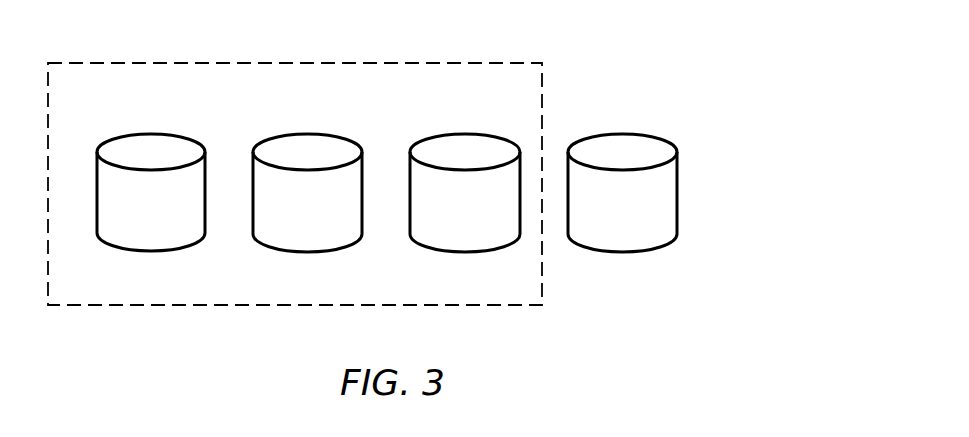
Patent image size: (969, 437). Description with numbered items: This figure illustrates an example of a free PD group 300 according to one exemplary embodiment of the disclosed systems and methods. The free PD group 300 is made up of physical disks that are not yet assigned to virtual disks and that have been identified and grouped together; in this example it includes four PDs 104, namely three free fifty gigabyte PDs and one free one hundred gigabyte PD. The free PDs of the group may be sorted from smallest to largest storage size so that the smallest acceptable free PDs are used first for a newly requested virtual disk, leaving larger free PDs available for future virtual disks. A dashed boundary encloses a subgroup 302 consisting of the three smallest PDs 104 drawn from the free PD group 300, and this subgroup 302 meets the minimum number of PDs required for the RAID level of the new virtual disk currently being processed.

The free PD group 300 is at (757, 64).
The subgroup 302 is at (110, 63).
The physical disks (PDs) 104 is at (147, 133).